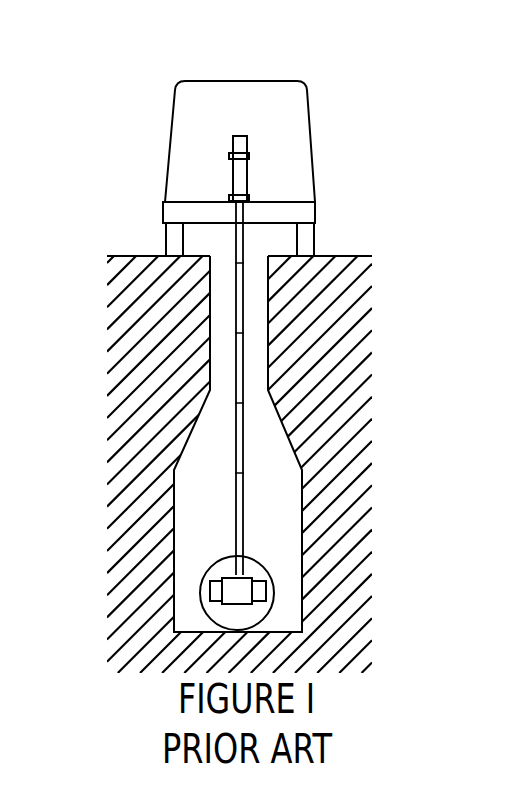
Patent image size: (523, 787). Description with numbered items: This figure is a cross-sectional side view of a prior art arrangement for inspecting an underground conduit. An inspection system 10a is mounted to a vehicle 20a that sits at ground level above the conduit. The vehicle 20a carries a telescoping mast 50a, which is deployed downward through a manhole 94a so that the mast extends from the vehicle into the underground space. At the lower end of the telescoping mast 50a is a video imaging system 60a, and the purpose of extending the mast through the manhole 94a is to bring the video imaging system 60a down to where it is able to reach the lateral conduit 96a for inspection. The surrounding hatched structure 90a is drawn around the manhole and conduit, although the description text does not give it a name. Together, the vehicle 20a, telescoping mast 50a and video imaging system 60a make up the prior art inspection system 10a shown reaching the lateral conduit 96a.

The inspection system 10a is at (339, 125).
The vehicle 20a is at (295, 81).
The telescoping mast 50a is at (245, 175).
The video imaging system 60a is at (218, 603).
The tank / well body 90a is at (147, 570).
The manhole 94a is at (255, 312).
The lateral conduit 96a is at (273, 603).